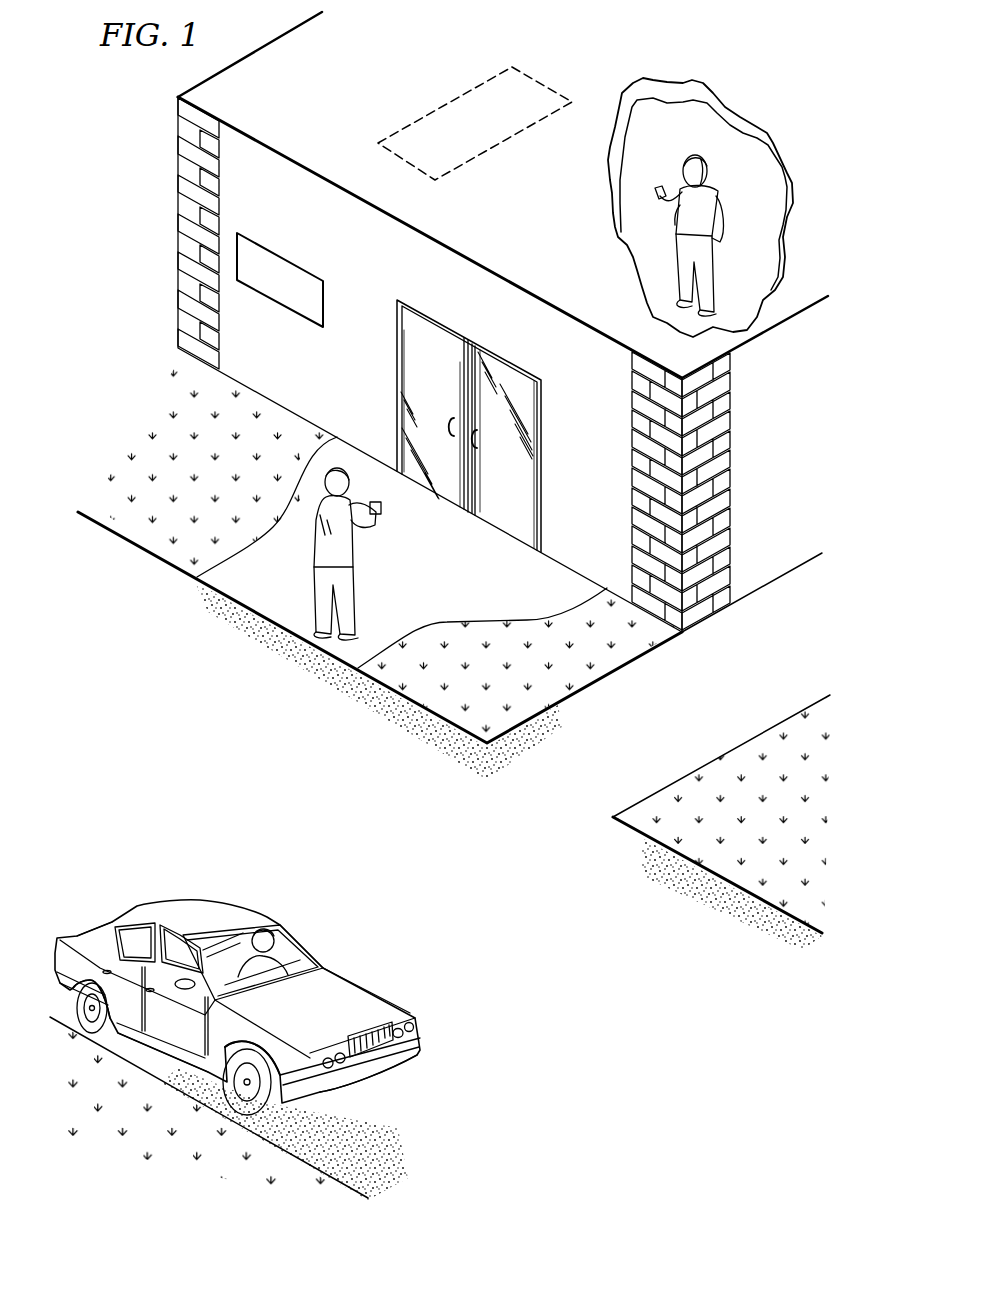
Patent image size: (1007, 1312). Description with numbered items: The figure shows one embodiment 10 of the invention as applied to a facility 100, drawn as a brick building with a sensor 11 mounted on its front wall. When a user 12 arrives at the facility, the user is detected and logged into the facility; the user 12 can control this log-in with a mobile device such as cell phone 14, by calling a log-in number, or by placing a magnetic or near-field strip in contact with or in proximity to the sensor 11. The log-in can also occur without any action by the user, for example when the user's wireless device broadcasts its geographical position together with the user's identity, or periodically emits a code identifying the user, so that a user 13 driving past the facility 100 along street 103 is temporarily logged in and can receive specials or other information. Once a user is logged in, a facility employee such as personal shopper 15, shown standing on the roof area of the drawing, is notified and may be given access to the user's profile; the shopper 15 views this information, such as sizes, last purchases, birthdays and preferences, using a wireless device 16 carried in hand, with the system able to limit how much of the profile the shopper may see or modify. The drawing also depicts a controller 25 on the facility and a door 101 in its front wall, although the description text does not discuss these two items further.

The embodiment 10 is at (76, 305).
The facility 100 is at (168, 197).
The controller 25 is at (433, 125).
The sensor 11 is at (278, 296).
The door 101 is at (505, 513).
The street 103 is at (433, 740).
The user 12 is at (353, 580).
The cell phone 14 is at (382, 507).
The personal shopper 15 is at (716, 213).
The wireless device 16 is at (659, 186).
The user 13 is at (308, 943).